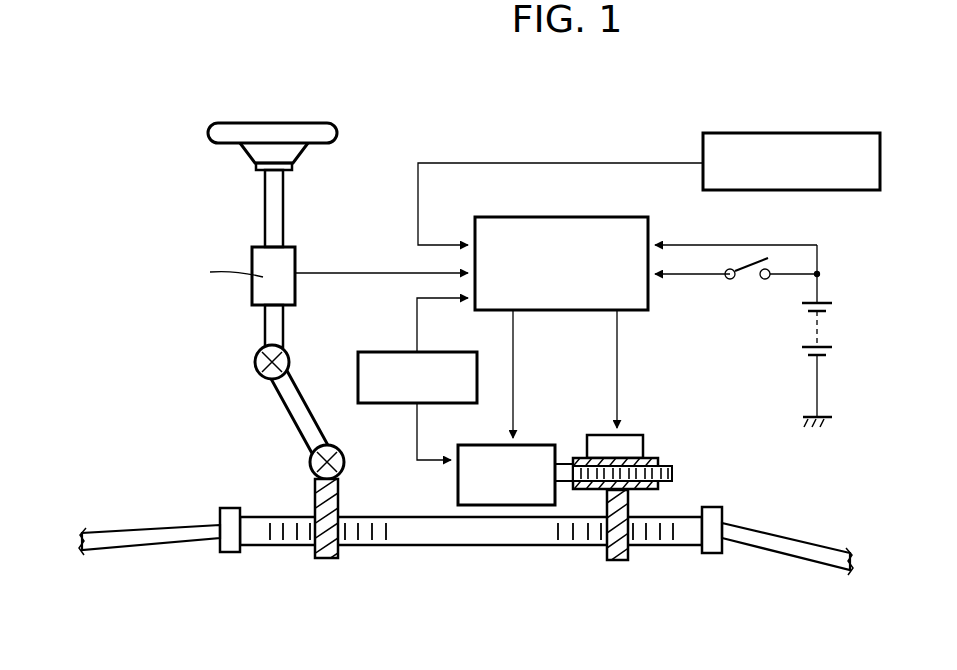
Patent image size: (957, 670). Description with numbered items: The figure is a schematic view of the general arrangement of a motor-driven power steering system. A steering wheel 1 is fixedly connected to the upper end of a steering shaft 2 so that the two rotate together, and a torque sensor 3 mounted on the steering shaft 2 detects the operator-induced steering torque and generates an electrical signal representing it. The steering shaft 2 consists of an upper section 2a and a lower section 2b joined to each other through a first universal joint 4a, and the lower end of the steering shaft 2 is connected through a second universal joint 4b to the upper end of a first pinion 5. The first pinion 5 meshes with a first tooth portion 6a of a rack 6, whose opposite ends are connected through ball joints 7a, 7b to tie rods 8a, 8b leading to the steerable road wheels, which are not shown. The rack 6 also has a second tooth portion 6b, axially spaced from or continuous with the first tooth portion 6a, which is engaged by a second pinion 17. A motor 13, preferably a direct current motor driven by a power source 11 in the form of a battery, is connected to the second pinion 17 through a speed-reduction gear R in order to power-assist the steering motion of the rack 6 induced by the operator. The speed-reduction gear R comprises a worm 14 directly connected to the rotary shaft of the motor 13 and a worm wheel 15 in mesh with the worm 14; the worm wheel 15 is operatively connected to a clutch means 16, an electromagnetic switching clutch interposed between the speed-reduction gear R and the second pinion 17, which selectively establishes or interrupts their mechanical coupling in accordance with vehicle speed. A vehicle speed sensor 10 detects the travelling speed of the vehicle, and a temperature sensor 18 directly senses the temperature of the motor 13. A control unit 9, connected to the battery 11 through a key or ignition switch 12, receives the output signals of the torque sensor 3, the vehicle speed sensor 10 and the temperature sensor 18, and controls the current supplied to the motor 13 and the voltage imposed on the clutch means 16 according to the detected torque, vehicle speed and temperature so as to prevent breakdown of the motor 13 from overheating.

The steering wheel 1 is at (208, 128).
The steering shaft 2 is at (266, 318).
The upper section 2a is at (283, 197).
The lower section 2b is at (287, 419).
The torque sensor 3 is at (295, 253).
The first universal joint 4a is at (255, 370).
The second universal joint 4b is at (310, 462).
The first pinion 5 is at (328, 560).
The rack 6 is at (471, 564).
The first tooth portion 6a is at (380, 539).
The second tooth portion 6b is at (570, 541).
The ball joint 7a is at (229, 553).
The ball joint 7b is at (713, 555).
The tie rod 8a is at (145, 548).
The tie rod 8b is at (796, 572).
The control unit 9 is at (560, 217).
The vehicle speed sensor 10 is at (880, 152).
The power source 11 is at (820, 322).
The key or ignition switch 12 is at (752, 277).
The motor 13 is at (533, 447).
The worm 14 is at (654, 468).
The worm wheel 15 is at (658, 460).
The clutch means 16 is at (632, 435).
The second pinion 17 is at (620, 562).
The temperature sensor 18 is at (378, 352).
The speed-reduction gear R is at (670, 458).